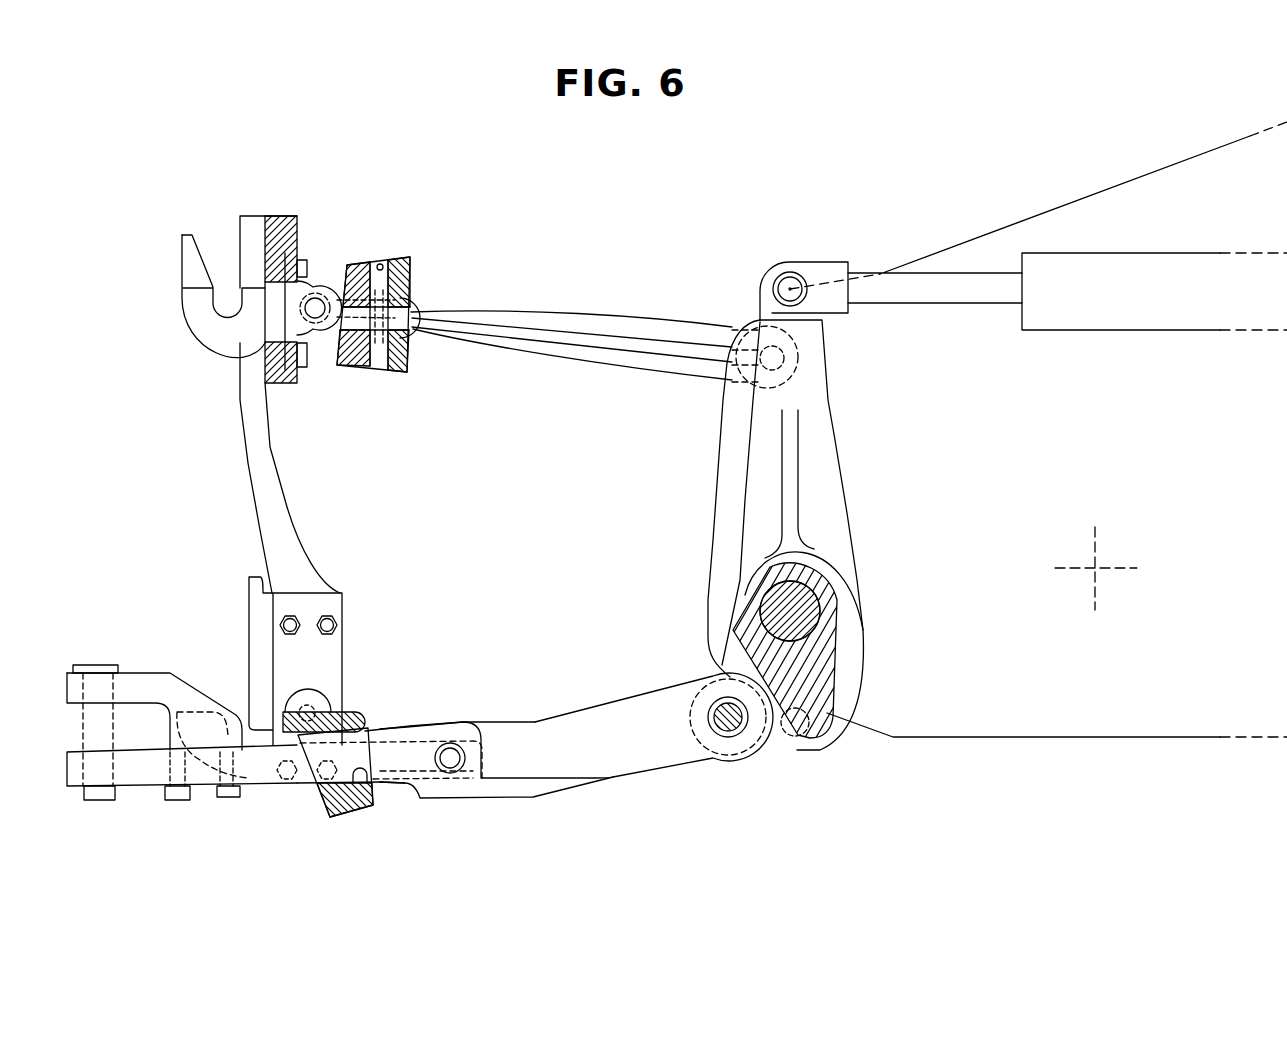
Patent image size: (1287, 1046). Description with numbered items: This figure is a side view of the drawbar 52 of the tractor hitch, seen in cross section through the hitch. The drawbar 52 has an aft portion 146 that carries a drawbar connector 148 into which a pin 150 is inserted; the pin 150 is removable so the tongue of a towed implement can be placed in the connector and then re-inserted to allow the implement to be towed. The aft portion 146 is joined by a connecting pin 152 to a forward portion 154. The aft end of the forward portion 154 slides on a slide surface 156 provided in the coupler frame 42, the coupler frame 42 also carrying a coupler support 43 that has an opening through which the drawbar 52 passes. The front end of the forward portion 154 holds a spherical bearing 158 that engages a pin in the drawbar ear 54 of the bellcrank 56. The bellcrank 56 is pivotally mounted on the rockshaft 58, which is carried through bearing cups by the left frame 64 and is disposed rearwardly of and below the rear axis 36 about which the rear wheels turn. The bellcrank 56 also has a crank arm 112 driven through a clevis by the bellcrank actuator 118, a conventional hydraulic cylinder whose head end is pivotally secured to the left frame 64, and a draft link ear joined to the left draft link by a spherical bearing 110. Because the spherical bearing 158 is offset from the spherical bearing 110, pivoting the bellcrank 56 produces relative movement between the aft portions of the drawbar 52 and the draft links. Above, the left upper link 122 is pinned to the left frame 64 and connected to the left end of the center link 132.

The rear axis 36 is at (1095, 568).
The coupler frame 42 is at (238, 404).
The coupler support 43 is at (322, 810).
The drawbar 52 is at (512, 822).
The drawbar ear 54 is at (778, 753).
The bellcrank 56 is at (837, 658).
The rockshaft 58 is at (838, 600).
The left frame 64 is at (1098, 207).
The spherical bearing 110 is at (797, 750).
The crank arm 112 is at (836, 440).
The bellcrank actuator 118 is at (1166, 266).
The left upper link 122 is at (617, 315).
The center link 132 is at (410, 263).
The aft portion 146 is at (168, 670).
The drawbar connector 148 is at (122, 627).
The pin 150 is at (113, 802).
The connecting pin 152 is at (453, 750).
The forward portion 154 is at (575, 710).
The slide surface 156 is at (372, 808).
The spherical bearing 158 is at (724, 740).